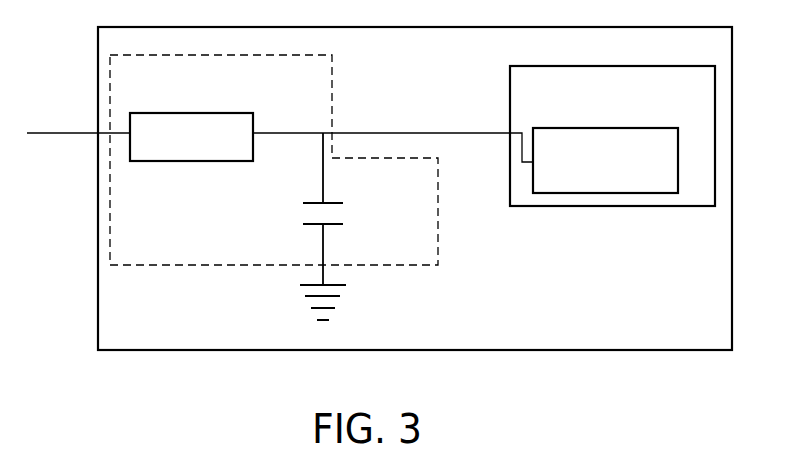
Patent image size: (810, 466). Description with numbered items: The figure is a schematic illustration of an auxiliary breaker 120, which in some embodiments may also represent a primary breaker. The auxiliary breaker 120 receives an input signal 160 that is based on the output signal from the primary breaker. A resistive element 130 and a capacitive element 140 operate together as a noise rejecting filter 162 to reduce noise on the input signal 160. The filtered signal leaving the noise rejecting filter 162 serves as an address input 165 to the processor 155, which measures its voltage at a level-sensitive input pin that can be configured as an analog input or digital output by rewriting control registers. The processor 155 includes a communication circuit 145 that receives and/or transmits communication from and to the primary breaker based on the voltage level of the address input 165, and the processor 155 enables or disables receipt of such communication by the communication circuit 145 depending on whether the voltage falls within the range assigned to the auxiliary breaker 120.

The auxiliary breaker 120 is at (735, 52).
The resistive element 130 is at (190, 113).
The capacitive element 140 is at (345, 212).
The communication circuit 145 is at (678, 157).
The processor 155 is at (617, 207).
The input signal 160 is at (62, 132).
The noise rejecting filter 162 is at (332, 72).
The address input 165 is at (465, 135).